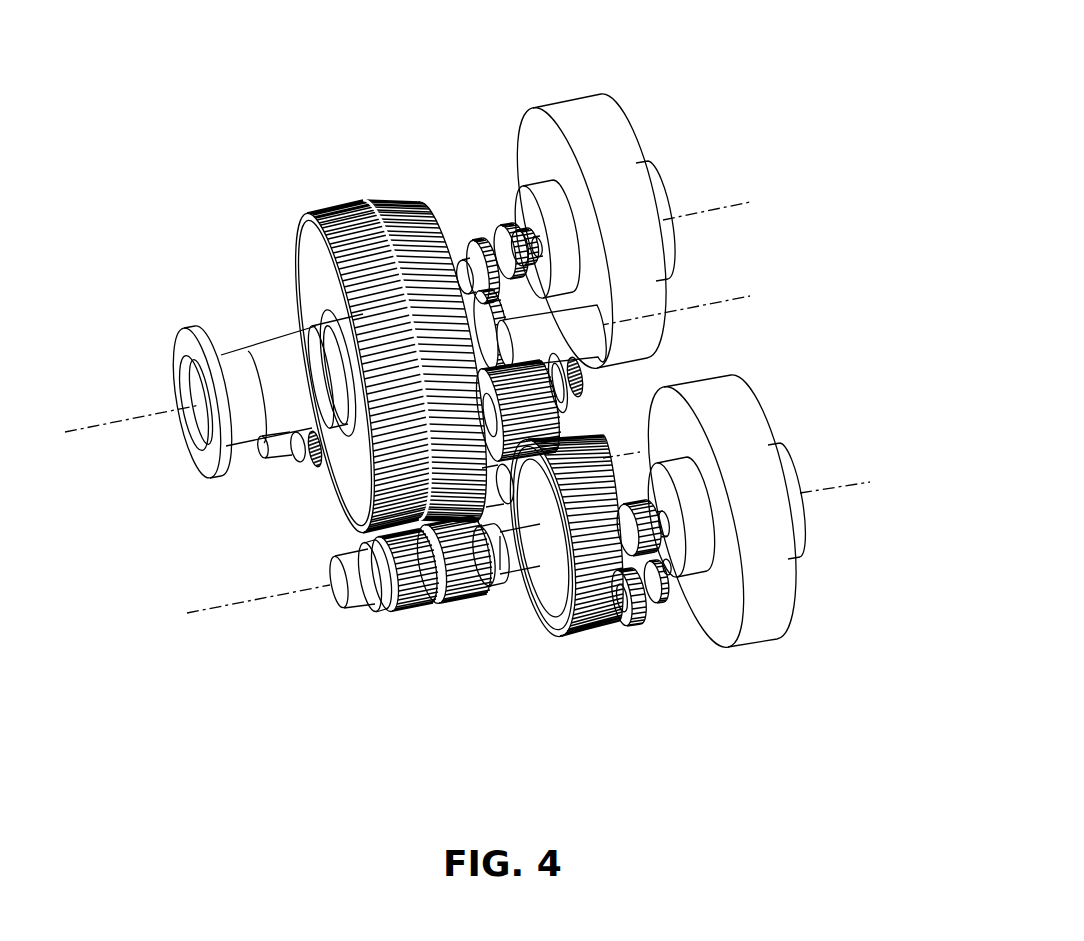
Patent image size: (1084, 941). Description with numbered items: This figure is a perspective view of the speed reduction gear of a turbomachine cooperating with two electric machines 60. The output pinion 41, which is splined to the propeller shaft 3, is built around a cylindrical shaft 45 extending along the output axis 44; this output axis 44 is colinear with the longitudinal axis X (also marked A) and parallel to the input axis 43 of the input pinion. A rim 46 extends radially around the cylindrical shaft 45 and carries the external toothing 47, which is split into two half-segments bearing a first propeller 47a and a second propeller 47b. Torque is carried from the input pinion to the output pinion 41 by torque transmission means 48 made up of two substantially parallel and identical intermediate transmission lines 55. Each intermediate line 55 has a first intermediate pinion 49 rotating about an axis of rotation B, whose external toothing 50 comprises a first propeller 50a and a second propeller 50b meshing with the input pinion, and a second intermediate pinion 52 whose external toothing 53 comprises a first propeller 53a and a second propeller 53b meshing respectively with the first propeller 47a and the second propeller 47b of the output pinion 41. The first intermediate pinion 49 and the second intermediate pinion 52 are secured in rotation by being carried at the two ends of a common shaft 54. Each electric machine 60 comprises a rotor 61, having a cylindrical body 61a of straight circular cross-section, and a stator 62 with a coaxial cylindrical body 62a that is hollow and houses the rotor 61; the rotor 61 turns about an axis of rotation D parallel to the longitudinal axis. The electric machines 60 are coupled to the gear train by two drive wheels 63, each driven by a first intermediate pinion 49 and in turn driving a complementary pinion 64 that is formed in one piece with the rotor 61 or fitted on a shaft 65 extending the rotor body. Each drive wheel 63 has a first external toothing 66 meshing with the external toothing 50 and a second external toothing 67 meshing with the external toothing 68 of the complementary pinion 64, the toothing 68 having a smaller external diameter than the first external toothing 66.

The propeller shaft 3 is at (188, 398).
The output pinion 41 is at (316, 330).
The input axis 43 is at (636, 444).
The output axis 44 is at (395, 416).
The longitudinal axis X is at (395, 416).
The axis A is at (120, 425).
The cylindrical shaft 45 is at (333, 322).
The rim 46 is at (373, 450).
The external toothing 47 is at (365, 281).
The first propeller 47a is at (345, 205).
The second propeller 47b is at (421, 204).
The torque transmission means 48 is at (503, 585).
The first intermediate pinion 49 is at (597, 630).
The external toothing 50 is at (614, 593).
The first propeller 50a is at (570, 630).
The second propeller 50b is at (620, 623).
The second intermediate pinion 52 is at (338, 592).
The external toothing 53 is at (389, 629).
The first propeller 53a is at (388, 600).
The second propeller 53b is at (455, 597).
The shaft 54 is at (514, 562).
The intermediate transmission line 55 is at (365, 568).
The axis of rotation B is at (205, 610).
The axis of rotation D is at (750, 202).
The electric machine 60 is at (677, 150).
The rotor 61 is at (867, 507).
The cylindrical body 61a is at (797, 520).
The stator 62 is at (775, 285).
The cylindrical body 62a is at (745, 410).
The drive wheel 63 is at (628, 622).
The complementary pinion 64 is at (674, 335).
The shaft 65 is at (490, 238).
The first external toothing 66 is at (474, 237).
The second external toothing 67 is at (663, 600).
The external toothing 68 is at (510, 222).